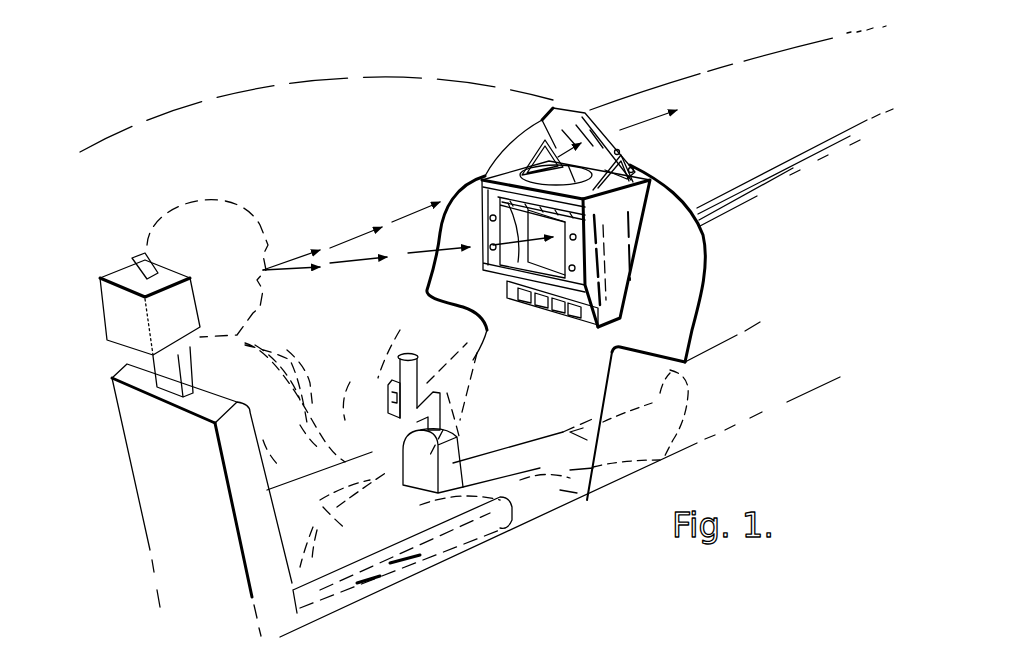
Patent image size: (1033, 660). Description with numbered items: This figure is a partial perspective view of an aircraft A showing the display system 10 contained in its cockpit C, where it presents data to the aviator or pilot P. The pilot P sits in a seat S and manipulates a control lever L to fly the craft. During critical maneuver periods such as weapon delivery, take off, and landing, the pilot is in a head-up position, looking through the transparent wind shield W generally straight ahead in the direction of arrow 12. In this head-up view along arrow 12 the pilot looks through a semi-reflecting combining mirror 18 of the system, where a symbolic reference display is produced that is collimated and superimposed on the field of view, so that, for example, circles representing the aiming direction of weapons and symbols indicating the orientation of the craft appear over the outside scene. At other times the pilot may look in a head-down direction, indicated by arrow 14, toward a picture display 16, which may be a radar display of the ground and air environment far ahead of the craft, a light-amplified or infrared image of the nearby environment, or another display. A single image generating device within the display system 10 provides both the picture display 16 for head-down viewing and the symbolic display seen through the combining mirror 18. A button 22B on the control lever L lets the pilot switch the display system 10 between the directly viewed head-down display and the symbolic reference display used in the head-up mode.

The display system 10 is at (512, 122).
The arrow 12 is at (652, 126).
The arrow 14 is at (342, 263).
The picture display 16 is at (560, 247).
The semi-reflecting combining mirror 18 is at (568, 123).
The button 22B is at (393, 385).
The aircraft A is at (687, 77).
The cockpit C is at (337, 107).
The wind shield W is at (437, 78).
The pilot P is at (243, 202).
The control lever L is at (403, 337).
The seat S is at (473, 550).